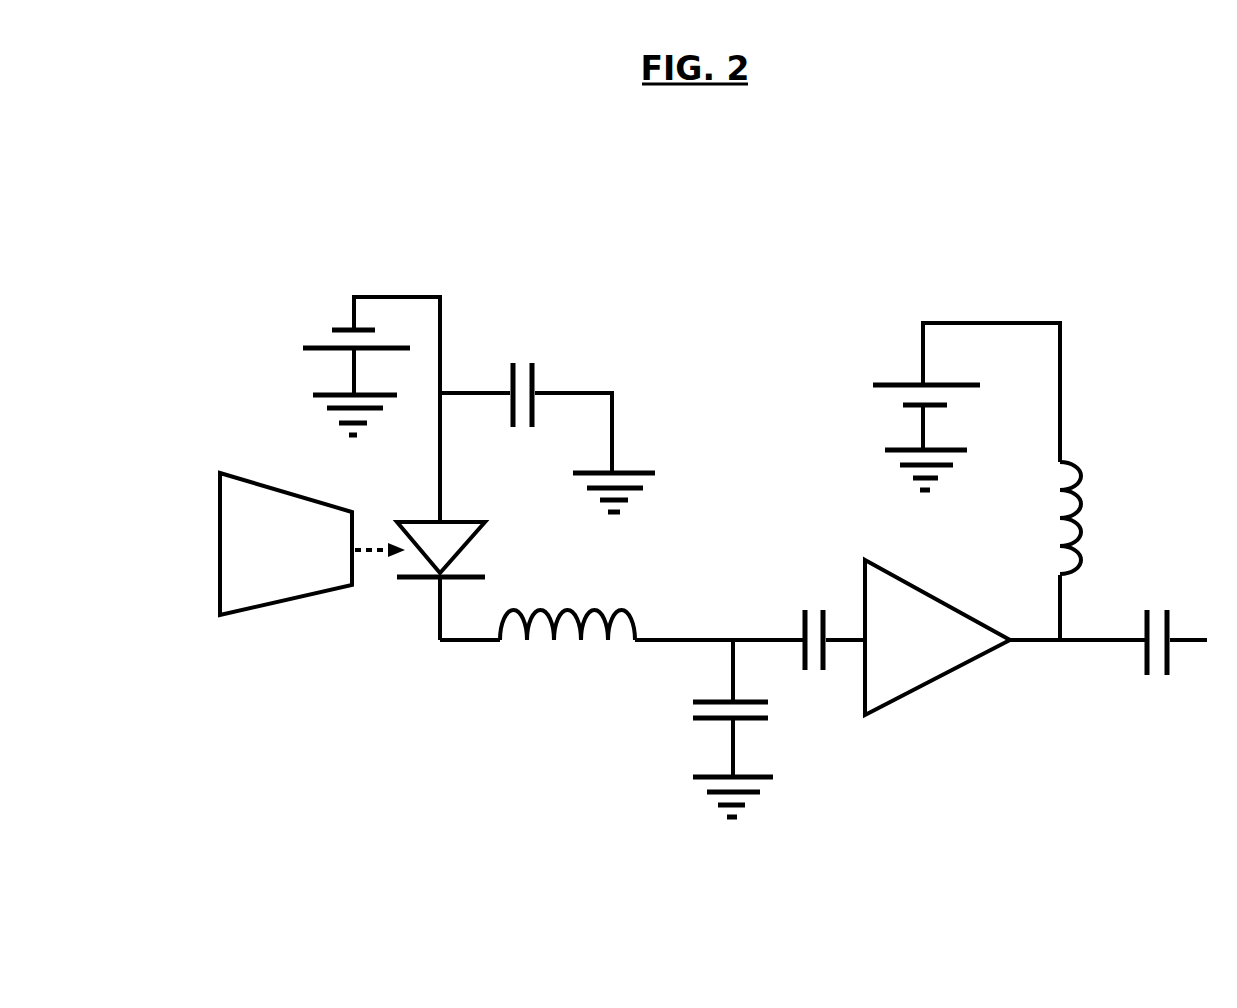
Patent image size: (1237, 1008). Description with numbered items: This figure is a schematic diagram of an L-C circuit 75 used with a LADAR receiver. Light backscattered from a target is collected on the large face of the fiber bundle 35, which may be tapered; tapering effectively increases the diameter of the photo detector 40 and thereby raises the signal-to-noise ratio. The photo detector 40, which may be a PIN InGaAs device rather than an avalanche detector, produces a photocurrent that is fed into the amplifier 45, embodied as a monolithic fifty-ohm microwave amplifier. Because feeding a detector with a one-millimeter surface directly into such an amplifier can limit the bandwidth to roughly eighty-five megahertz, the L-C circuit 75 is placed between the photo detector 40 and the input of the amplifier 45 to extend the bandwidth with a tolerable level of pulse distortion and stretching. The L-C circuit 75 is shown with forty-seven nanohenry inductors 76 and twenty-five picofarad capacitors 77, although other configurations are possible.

The fiber bundle 35 is at (222, 615).
The photo detector 40 is at (397, 577).
The amplifier 45 is at (866, 712).
The L-C circuit 75 is at (755, 473).
The inductors 76 is at (511, 624).
The capacitors 77 is at (1146, 664).